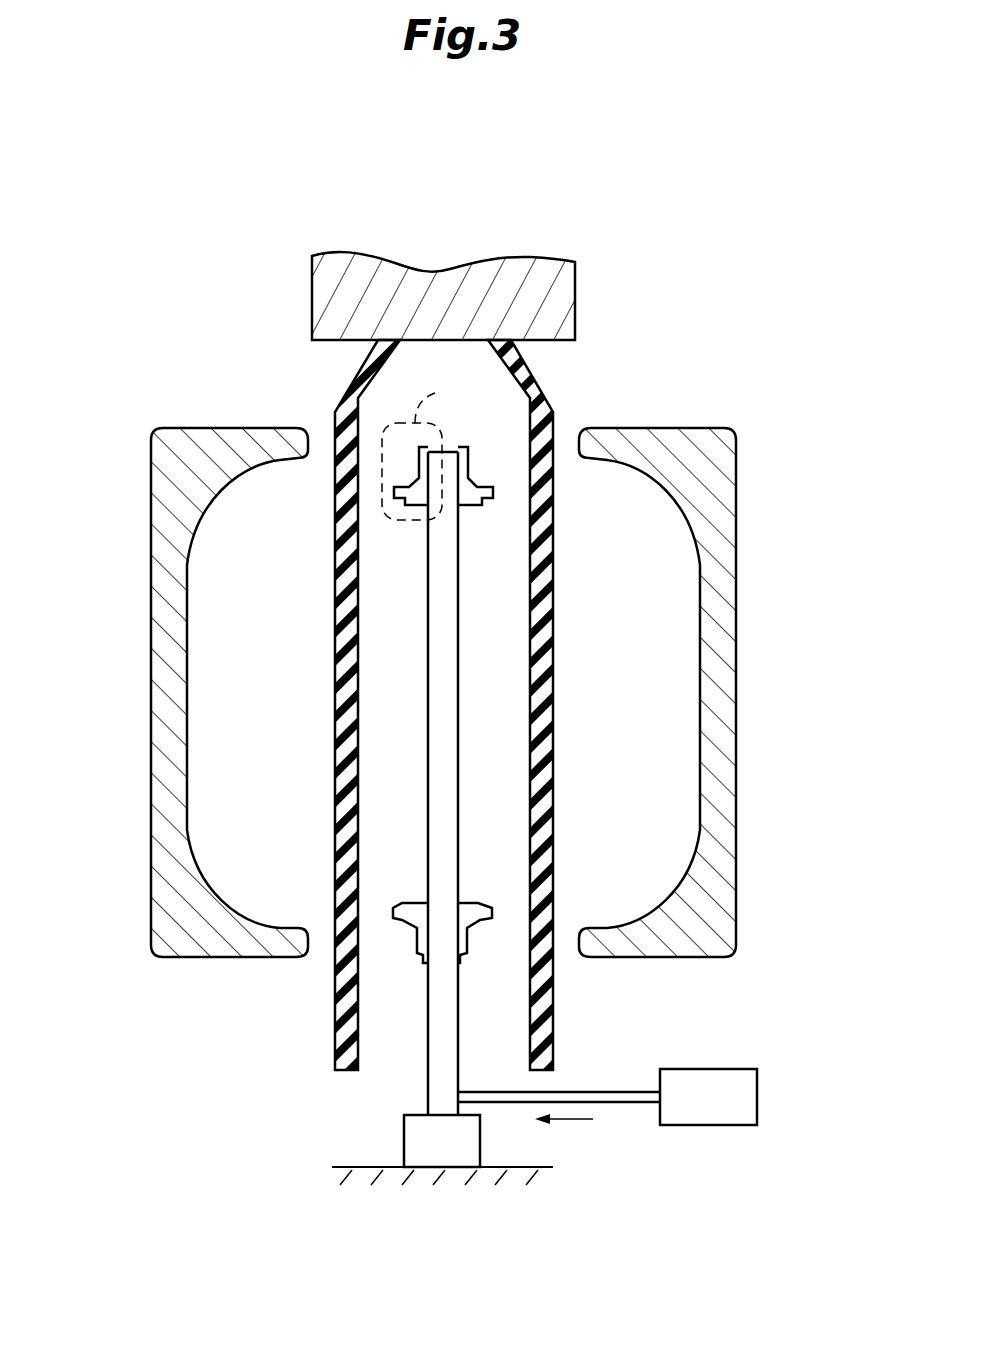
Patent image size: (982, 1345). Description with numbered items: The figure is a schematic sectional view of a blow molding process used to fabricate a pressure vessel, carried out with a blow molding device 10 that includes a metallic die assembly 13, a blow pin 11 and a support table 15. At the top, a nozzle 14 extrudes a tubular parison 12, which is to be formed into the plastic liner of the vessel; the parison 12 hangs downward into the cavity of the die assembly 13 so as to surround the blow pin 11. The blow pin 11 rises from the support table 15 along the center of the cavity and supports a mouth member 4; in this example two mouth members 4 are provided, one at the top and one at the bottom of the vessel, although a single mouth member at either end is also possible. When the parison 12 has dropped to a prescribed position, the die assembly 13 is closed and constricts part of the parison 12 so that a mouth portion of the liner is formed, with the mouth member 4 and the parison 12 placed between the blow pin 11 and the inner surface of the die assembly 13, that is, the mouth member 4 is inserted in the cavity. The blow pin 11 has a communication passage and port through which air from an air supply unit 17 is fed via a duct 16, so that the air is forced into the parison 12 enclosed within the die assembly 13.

The blow molding device 10 is at (712, 284).
The mouth member 4 is at (416, 500).
The blow pin 11 is at (453, 588).
The parison 12 is at (350, 383).
The die assembly 13 is at (158, 483).
The nozzle 14 is at (535, 262).
The support table 15 is at (410, 1127).
The duct 16 is at (607, 1092).
The air supply unit 17 is at (732, 1073).